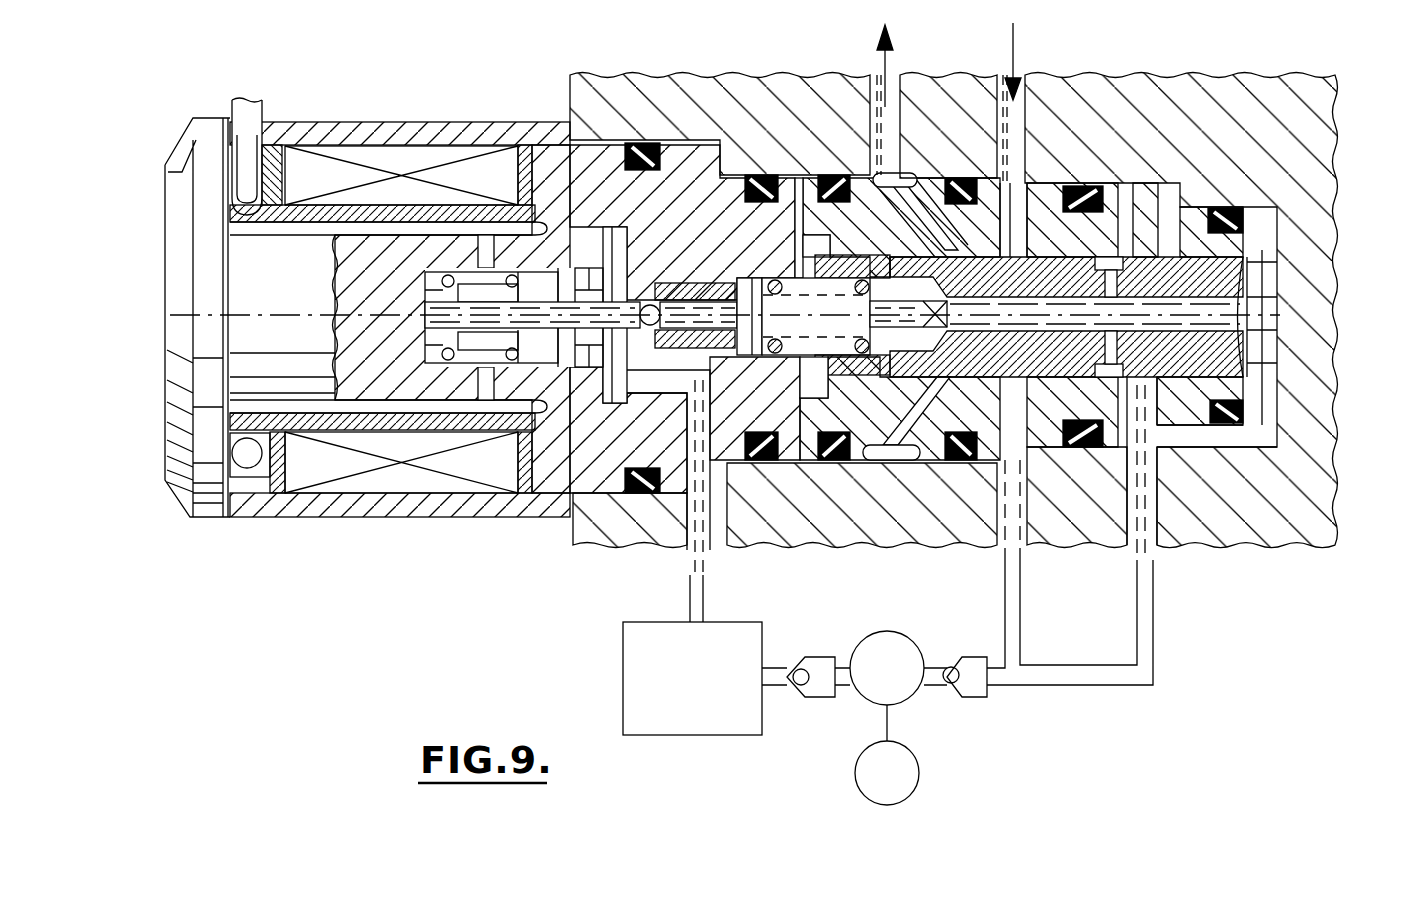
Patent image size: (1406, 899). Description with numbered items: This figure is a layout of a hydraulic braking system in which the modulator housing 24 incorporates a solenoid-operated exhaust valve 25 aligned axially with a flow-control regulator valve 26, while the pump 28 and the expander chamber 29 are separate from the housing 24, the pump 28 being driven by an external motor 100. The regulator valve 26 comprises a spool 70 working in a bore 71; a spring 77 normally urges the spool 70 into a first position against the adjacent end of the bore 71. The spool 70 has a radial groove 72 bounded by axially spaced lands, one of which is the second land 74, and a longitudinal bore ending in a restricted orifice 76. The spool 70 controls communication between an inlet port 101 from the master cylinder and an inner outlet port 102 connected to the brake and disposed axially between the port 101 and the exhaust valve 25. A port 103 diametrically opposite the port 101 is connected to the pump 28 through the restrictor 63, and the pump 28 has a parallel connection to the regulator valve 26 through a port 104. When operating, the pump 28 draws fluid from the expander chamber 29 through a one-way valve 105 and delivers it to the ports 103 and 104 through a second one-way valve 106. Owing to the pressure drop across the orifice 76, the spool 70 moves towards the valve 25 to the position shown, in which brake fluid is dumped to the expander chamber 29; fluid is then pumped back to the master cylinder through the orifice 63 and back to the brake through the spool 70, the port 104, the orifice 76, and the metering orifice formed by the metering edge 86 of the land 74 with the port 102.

The housing 24 is at (1120, 258).
The solenoid-operated exhaust valve 25 is at (545, 325).
The flow-control regulator valve 26 is at (893, 270).
The pump 28 is at (900, 687).
The expander chamber 29 is at (692, 697).
The restrictor 63 is at (1018, 512).
The spool 70 is at (1225, 267).
The bore 71 is at (1187, 257).
The radial groove 72 is at (955, 182).
The second land 74 is at (845, 378).
The restricted orifice 76 is at (975, 258).
The spring 77 is at (785, 197).
The metering edge 86 is at (870, 370).
The external motor 100 is at (893, 785).
The inlet port 101 is at (1010, 135).
The inner outlet port 102 is at (853, 193).
The port 103 is at (1000, 480).
The port 104 is at (1180, 433).
The one-way valve 105 is at (822, 683).
The second one-way valve 106 is at (955, 687).